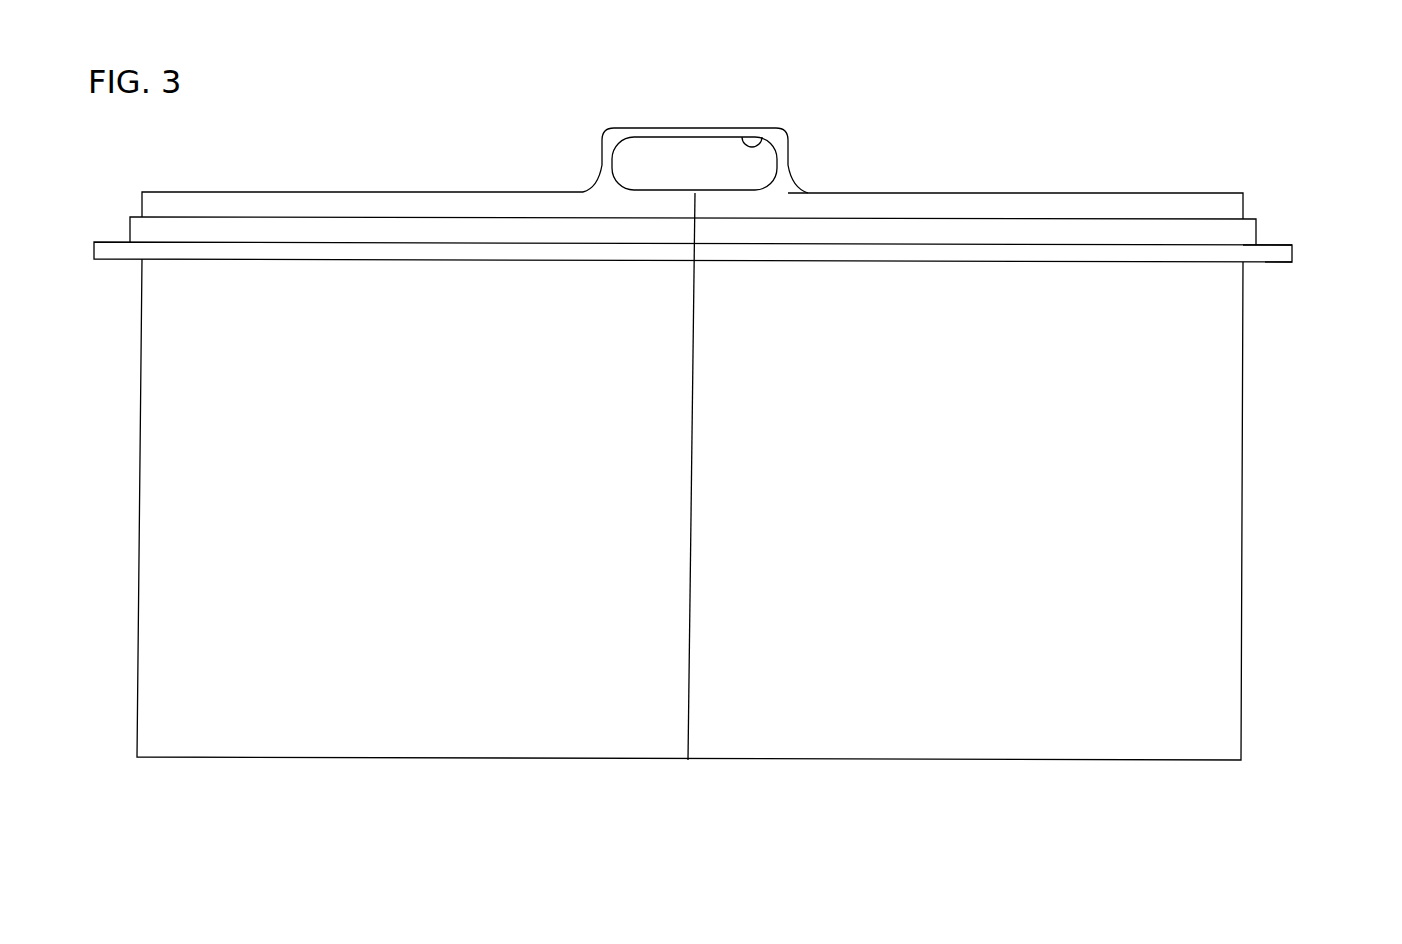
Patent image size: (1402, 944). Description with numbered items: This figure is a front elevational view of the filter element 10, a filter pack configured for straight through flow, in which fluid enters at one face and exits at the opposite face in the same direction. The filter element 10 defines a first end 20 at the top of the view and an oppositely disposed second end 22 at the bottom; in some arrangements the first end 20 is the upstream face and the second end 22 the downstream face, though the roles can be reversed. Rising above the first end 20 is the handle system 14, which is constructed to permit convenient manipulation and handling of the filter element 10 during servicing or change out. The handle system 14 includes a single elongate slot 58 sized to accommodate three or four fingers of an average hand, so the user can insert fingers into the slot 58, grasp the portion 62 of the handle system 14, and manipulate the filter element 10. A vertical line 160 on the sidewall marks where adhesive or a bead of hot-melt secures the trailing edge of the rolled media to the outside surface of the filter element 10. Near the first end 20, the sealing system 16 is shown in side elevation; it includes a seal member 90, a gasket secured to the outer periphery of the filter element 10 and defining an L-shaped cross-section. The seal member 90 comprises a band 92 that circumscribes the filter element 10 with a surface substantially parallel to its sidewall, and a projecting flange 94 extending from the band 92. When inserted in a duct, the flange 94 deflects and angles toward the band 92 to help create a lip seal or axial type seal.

The filter element 10 is at (920, 128).
The handle system 14 is at (698, 96).
The sealing system 16 is at (1318, 237).
The first end 20 is at (187, 192).
The second end 22 is at (225, 757).
The elongate slot 58 is at (762, 139).
The portion of the handle system 62 is at (630, 133).
The seal member 90 is at (1256, 232).
The band 92 is at (403, 233).
The projecting flange 94 is at (1265, 262).
The line 160 is at (690, 642).